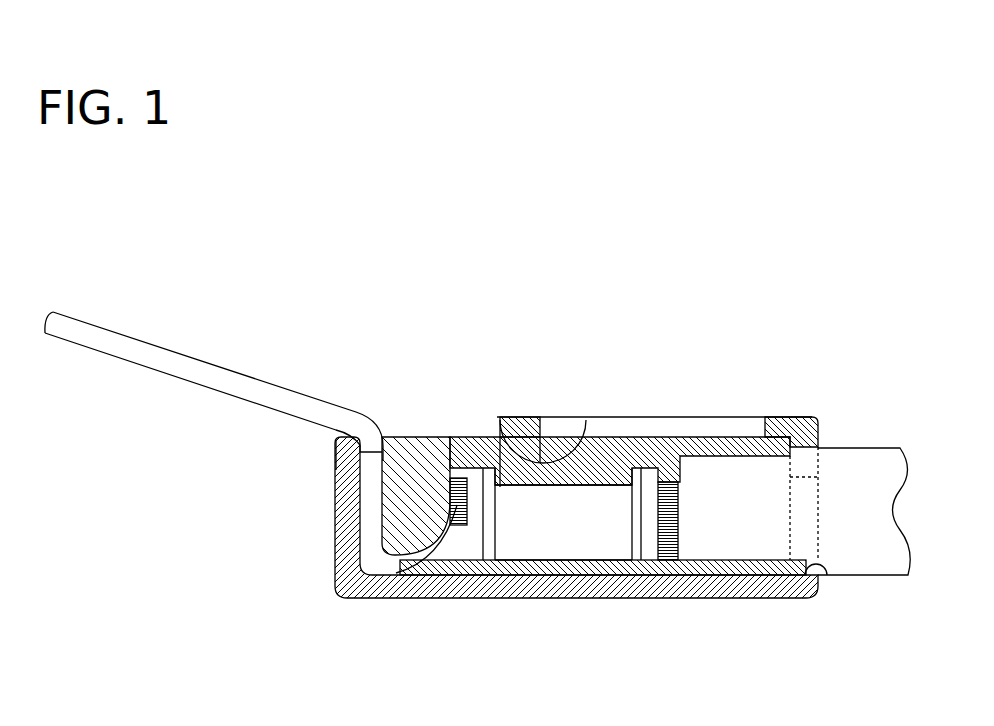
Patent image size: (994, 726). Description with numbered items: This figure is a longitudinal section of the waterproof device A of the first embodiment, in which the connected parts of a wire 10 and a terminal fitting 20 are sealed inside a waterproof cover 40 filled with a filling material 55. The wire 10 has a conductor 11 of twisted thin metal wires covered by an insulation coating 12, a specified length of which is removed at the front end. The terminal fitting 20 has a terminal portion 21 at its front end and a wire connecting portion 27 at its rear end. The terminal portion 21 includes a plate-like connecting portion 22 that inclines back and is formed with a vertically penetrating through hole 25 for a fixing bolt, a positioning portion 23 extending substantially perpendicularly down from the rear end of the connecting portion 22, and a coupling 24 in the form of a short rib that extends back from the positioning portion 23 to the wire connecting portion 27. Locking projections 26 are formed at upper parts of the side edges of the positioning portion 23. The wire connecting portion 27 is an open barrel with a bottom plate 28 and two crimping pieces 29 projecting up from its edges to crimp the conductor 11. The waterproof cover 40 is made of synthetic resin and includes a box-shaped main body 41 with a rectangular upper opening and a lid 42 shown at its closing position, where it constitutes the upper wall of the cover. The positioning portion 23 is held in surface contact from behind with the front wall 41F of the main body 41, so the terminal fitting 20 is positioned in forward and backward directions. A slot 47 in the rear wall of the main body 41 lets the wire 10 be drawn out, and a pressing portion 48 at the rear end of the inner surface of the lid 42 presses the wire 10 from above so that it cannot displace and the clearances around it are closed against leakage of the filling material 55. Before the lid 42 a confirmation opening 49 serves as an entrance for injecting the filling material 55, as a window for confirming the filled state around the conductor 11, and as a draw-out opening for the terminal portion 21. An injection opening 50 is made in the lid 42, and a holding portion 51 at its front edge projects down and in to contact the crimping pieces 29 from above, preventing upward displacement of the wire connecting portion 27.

The wire 10 is at (881, 587).
The conductor 11 is at (457, 492).
The insulation coating 12 is at (742, 548).
The terminal fitting 20 is at (368, 332).
The terminal portion 21 is at (232, 470).
The plate-like connecting portion 22 is at (285, 412).
The positioning portion 23 is at (368, 519).
The coupling 24 is at (392, 566).
The through hole 25 is at (229, 386).
The locking projection 26 is at (376, 464).
The wire connecting portion 27 is at (612, 668).
The bottom plate 28 is at (536, 560).
The crimping piece 29 is at (593, 520).
The waterproof cover 40 is at (826, 338).
The main body 41 is at (773, 578).
The front wall 41F is at (336, 458).
The lid 42 is at (781, 428).
The slot 47 is at (828, 578).
The pressing portion 48 is at (812, 468).
The confirmation opening 49 is at (488, 428).
The injection opening 50 is at (553, 435).
The holding portion 51 is at (540, 468).
The filling material 55 is at (440, 445).
The waterproof device A is at (780, 282).